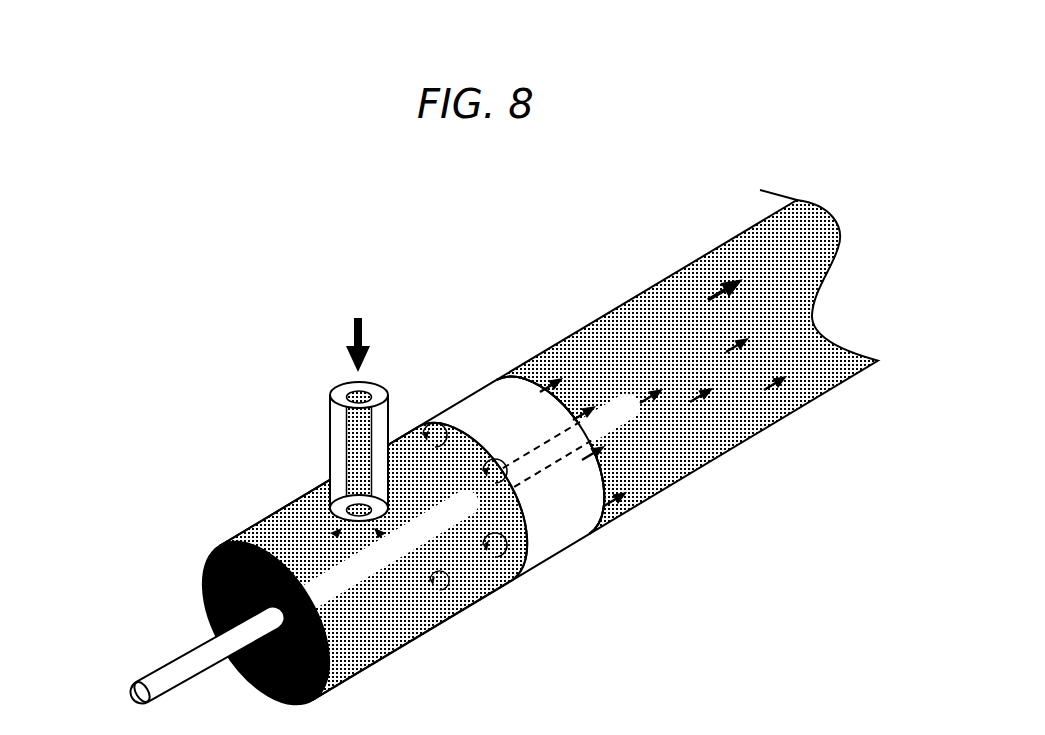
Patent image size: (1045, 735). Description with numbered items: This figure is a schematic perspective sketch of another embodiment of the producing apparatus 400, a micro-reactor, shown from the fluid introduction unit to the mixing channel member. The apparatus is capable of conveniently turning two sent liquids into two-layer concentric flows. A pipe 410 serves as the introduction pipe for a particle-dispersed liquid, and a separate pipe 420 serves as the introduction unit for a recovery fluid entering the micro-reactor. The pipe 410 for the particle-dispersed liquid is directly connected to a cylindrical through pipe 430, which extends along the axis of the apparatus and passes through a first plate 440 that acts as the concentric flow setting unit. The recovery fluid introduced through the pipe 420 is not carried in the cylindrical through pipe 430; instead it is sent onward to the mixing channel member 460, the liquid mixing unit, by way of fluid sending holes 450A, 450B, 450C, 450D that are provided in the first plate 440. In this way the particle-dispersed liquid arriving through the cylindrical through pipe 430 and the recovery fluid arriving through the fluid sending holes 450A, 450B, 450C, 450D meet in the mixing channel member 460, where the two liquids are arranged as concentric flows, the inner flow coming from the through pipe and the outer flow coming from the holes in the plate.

The producing apparatus 400 is at (459, 460).
The pipe 410 is at (102, 714).
The pipe 420 is at (355, 330).
The cylindrical through pipe 430 is at (413, 640).
The first plate 440 is at (583, 505).
The fluid sending hole 450A is at (421, 445).
The fluid sending hole 450B is at (457, 612).
The fluid sending hole 450C is at (503, 582).
The fluid sending hole 450D is at (497, 468).
The mixing channel member 460 is at (760, 435).